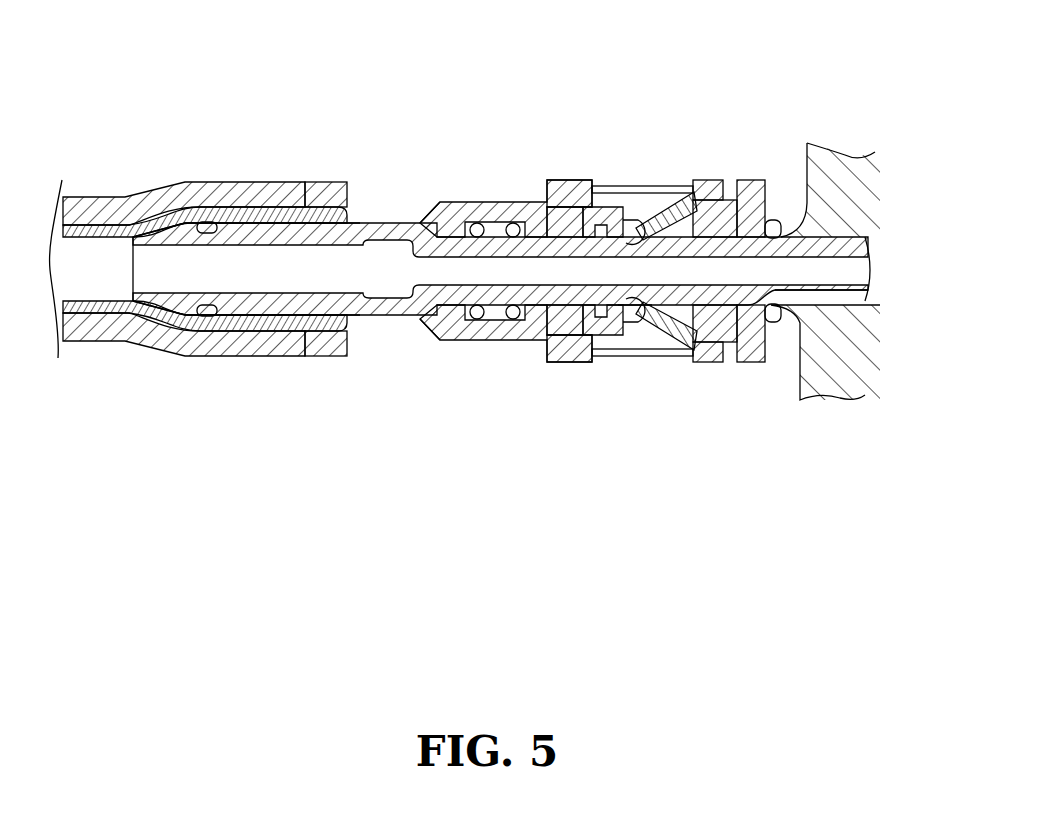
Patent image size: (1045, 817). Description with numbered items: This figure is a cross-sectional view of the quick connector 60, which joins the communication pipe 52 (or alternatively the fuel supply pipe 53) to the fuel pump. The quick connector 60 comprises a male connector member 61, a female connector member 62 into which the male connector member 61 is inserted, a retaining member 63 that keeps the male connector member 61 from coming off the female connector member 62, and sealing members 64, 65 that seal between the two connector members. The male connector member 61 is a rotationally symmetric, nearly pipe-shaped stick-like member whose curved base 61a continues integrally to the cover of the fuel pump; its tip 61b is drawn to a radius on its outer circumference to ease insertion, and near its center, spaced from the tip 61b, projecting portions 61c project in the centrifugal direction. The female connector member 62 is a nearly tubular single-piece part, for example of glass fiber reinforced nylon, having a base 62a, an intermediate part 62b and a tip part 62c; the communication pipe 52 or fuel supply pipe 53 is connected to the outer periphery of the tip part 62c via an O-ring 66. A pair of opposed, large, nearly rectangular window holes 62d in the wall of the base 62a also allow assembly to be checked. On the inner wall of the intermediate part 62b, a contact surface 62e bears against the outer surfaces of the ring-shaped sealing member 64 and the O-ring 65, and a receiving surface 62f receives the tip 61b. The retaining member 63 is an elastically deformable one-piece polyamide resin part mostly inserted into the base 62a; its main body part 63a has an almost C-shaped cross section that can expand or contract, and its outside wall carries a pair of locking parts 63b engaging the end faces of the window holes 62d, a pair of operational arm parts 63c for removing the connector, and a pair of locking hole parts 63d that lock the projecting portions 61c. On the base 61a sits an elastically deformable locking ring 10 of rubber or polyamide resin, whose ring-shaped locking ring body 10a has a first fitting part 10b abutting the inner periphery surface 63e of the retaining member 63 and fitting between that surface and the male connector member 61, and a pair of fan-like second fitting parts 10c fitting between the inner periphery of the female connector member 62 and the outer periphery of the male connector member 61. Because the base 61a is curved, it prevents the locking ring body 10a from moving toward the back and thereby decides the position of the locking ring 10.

The locking ring 10 is at (854, 247).
The locking ring body 10a is at (797, 195).
The first fitting part 10b is at (789, 208).
The second fitting parts 10c is at (870, 288).
The communication pipe 52 is at (273, 187).
The fuel supply pipe 53 is at (205, 269).
The quick connector 60 is at (656, 126).
The male connector member 61 is at (501, 283).
The base 61a is at (793, 367).
The tip 61b is at (440, 244).
The projecting portions 61c is at (628, 325).
The female connector member 62 is at (519, 272).
The base 62a is at (712, 181).
The intermediate part 62b is at (528, 198).
The tip part 62c is at (306, 186).
The window holes 62d is at (656, 187).
The contact surface 62e is at (535, 342).
The receiving surface 62f is at (415, 310).
The retaining member 63 is at (671, 293).
The main body part 63a is at (745, 181).
The locking parts 63b is at (673, 360).
The operational arm parts 63c is at (742, 366).
The locking hole parts 63d is at (603, 338).
The inner periphery surface 63e is at (632, 222).
The sealing member 64 is at (558, 212).
The O-ring 65 is at (513, 223).
The O-ring 66 is at (210, 318).